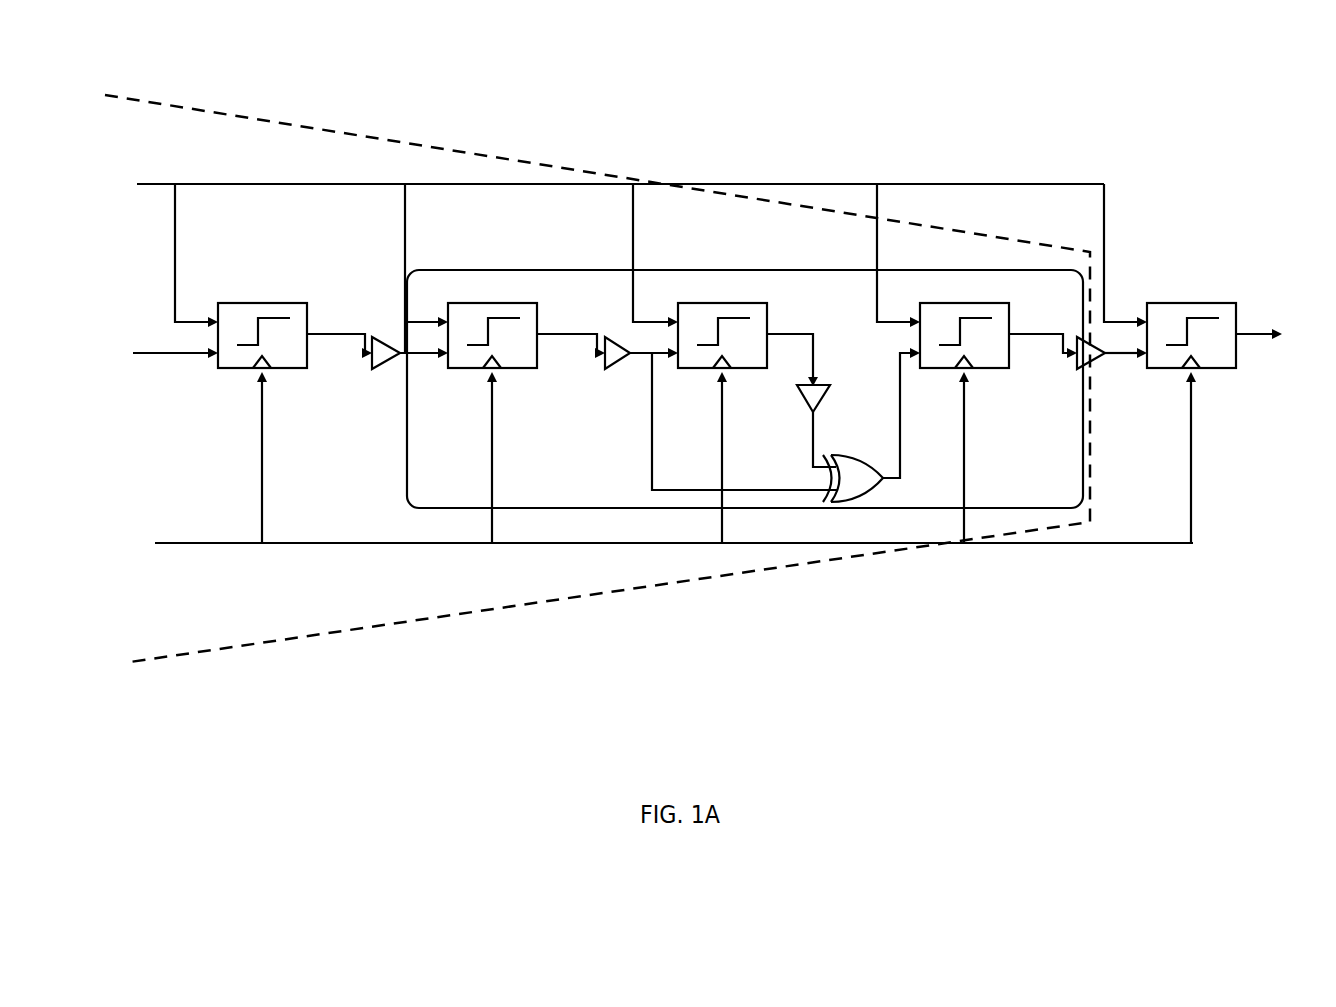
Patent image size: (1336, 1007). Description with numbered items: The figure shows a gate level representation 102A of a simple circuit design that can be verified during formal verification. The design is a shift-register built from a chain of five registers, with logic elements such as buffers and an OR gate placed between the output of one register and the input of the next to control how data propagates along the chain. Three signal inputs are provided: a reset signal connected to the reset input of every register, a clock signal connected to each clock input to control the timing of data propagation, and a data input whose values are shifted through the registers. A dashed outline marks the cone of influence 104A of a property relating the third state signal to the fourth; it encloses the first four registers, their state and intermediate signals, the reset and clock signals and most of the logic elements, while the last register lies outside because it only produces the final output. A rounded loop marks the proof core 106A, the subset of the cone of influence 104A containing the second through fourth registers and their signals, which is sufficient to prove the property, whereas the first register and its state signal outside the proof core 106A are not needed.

The gate level representation 102A is at (1188, 95).
The cone of influence 104A is at (470, 153).
The proof core 106A is at (400, 474).